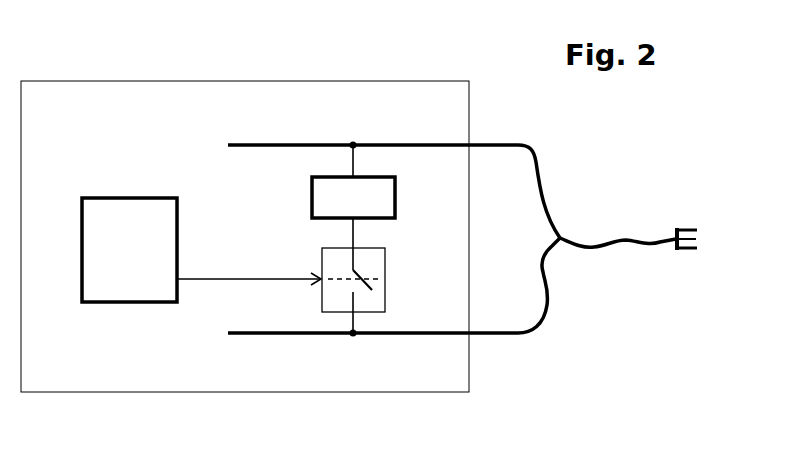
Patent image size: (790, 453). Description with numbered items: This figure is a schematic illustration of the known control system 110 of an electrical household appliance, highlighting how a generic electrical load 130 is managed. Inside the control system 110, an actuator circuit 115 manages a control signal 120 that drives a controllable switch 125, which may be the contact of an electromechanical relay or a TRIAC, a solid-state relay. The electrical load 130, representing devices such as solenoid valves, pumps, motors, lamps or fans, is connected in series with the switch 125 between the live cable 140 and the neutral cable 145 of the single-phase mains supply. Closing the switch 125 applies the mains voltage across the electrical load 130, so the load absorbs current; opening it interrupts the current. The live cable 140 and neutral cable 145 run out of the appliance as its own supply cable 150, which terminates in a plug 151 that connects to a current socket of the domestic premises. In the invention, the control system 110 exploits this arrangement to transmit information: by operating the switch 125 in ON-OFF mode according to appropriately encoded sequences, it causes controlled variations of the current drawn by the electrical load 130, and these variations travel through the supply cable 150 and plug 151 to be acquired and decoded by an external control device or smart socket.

The control system 110 is at (245, 81).
The actuator circuit 115 is at (138, 238).
The control signal 120 is at (250, 278).
The controlled switch 125 is at (368, 268).
The electrical load 130 is at (325, 188).
The live cable 140 is at (294, 145).
The neutral cable 145 is at (448, 335).
The supply cable 150 is at (582, 240).
The plug 151 is at (673, 252).